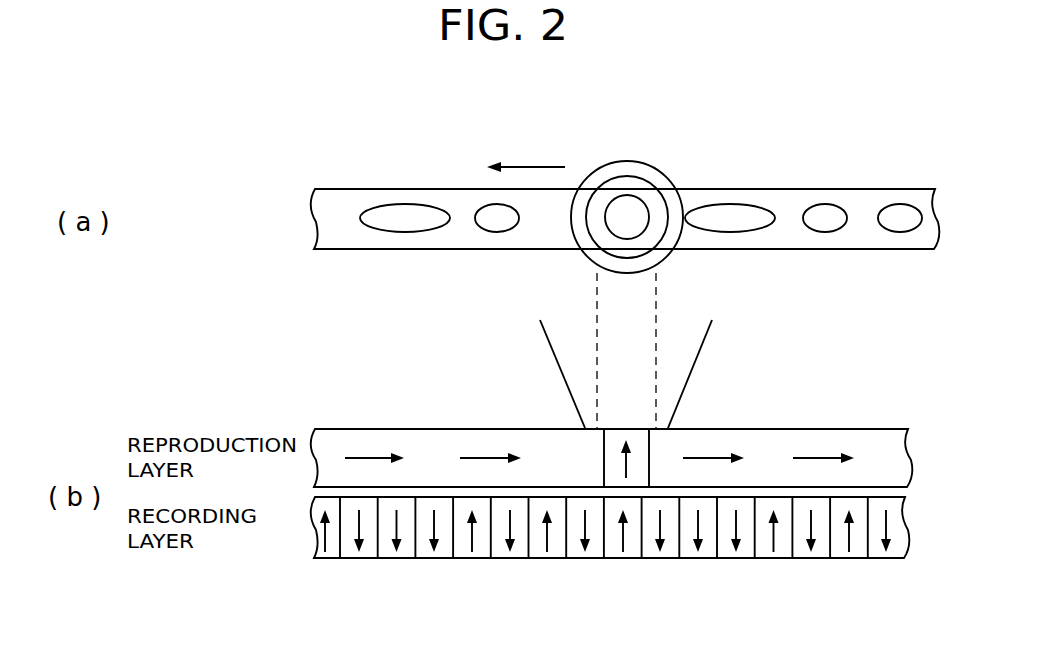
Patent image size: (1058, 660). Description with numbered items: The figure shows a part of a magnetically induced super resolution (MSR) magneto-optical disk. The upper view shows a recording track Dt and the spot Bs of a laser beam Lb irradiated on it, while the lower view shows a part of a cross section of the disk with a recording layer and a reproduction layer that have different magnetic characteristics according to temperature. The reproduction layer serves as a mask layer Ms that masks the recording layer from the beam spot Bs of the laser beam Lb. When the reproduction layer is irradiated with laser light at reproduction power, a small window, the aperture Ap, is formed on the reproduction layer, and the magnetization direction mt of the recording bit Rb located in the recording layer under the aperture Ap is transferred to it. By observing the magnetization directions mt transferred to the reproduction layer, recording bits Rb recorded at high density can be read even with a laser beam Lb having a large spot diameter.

The beam spot Bs is at (659, 169).
The mask layer Ms is at (655, 249).
The aperture Ap is at (605, 218).
The recording track Dt is at (387, 232).
The laser beam Lb is at (561, 372).
The magnetization direction mt is at (827, 457).
The recording bit Rb is at (332, 547).